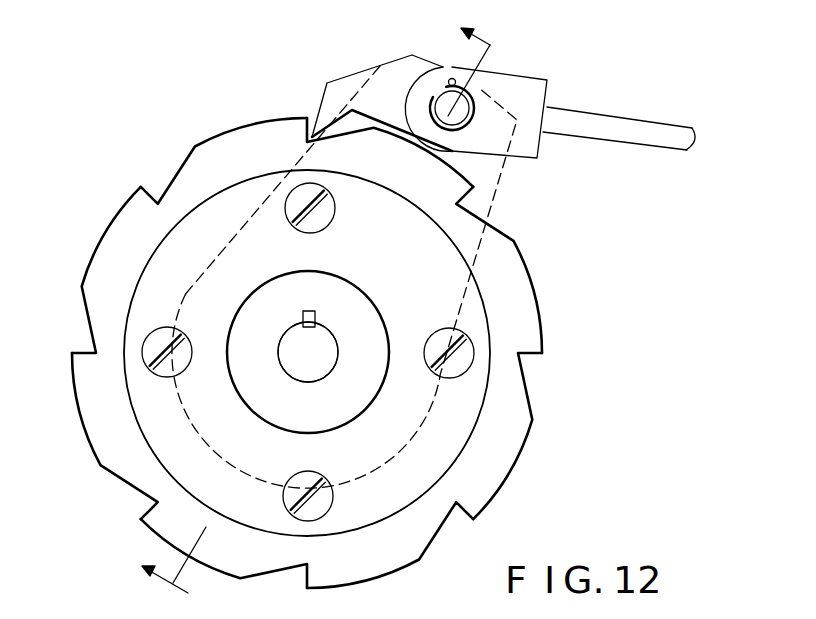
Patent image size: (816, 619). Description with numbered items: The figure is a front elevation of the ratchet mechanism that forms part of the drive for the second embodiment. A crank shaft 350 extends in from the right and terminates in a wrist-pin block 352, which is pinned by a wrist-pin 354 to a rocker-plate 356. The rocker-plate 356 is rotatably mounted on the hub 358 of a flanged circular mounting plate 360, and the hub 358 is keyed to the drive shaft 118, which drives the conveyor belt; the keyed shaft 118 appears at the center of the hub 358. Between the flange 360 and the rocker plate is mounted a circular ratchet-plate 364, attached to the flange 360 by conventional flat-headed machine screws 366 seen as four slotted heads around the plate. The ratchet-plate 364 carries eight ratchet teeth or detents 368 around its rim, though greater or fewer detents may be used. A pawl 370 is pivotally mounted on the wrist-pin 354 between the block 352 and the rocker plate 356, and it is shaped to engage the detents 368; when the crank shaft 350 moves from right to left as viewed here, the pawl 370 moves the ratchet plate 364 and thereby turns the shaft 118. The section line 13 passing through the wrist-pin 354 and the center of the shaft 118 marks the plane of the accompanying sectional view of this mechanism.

The section line 13- 13 is at (490, 45).
The drive shaft 118 is at (312, 372).
The crank shaft 350 is at (647, 123).
The wrist-pin block 352 is at (517, 93).
The wrist-pin 354 is at (458, 106).
The rocker-plate 356 is at (483, 190).
The hub 358 is at (355, 388).
The flanged circular mounting plate 360 is at (458, 413).
The ratchet-plate 364 is at (513, 292).
The fastening screws 366 is at (460, 357).
The ratchet teeth or detents 368 is at (178, 158).
The pawl 370 is at (380, 68).